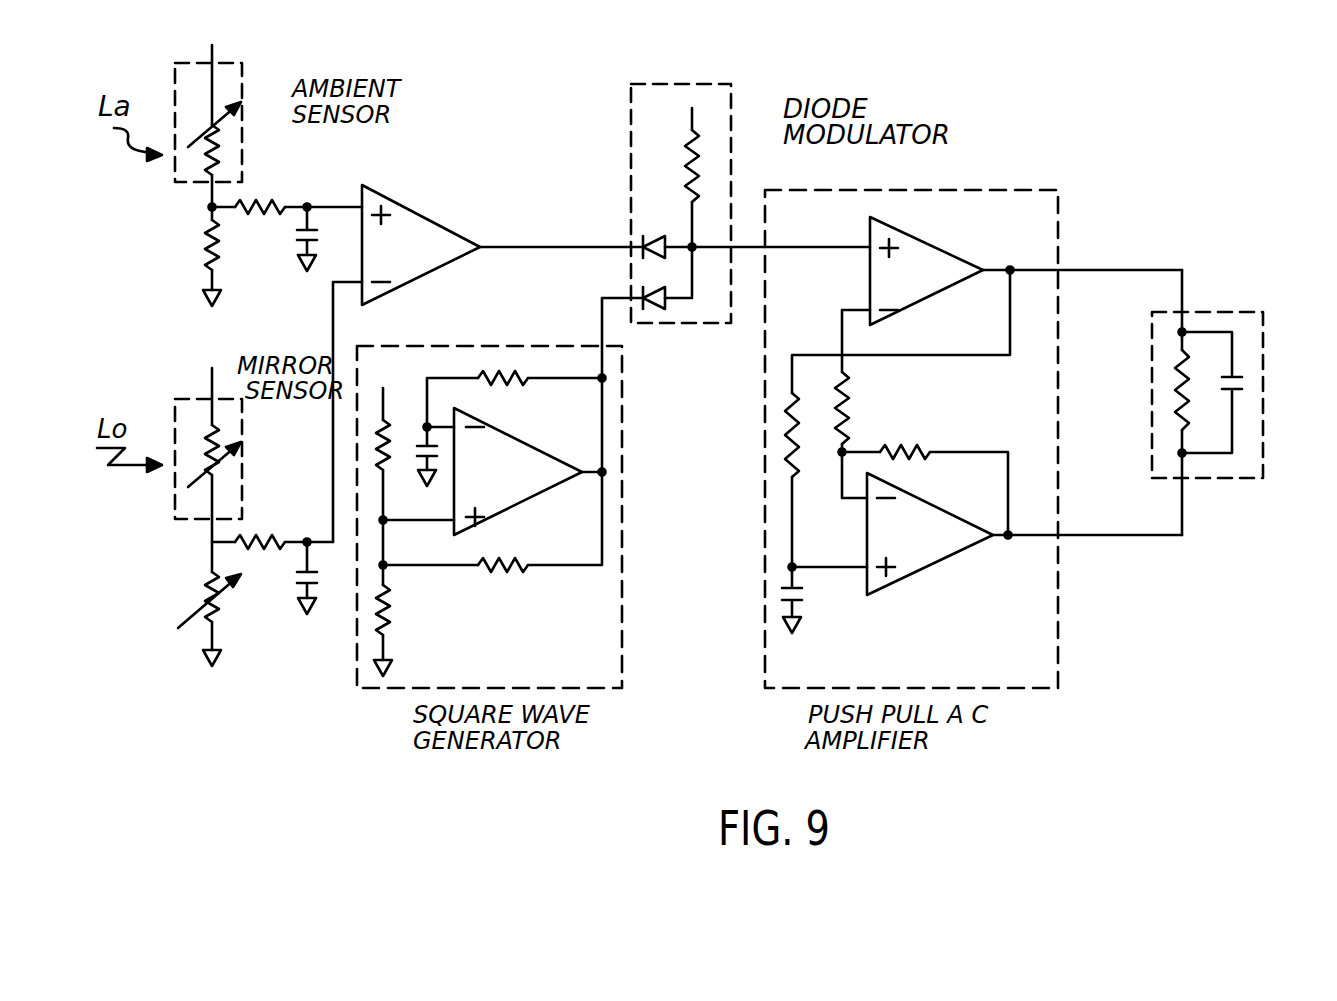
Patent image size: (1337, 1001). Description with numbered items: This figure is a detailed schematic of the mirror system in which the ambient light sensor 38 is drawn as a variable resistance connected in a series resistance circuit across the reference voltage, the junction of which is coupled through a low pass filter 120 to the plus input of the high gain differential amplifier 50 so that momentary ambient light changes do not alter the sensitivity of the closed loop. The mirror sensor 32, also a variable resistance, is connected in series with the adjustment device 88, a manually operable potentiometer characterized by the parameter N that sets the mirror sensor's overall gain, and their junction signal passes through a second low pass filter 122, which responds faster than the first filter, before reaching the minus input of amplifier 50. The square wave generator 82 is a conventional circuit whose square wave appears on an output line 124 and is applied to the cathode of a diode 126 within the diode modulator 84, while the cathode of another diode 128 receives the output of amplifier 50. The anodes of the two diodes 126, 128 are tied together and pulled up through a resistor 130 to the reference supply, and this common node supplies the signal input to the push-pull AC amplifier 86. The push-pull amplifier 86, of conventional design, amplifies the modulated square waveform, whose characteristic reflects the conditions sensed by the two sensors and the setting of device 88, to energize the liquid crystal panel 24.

The liquid crystal panel 24 is at (1265, 428).
The mirror sensor 32 is at (245, 475).
The ambient light sensor 38 is at (238, 63).
The high gain differential amplifier 50 is at (403, 204).
The square wave generator circuit 82 is at (622, 590).
The diode modulator circuit 84 is at (687, 209).
The push-pull AC amplifier circuit 86 is at (1058, 625).
The adjustment device 88 is at (215, 622).
The low pass filter 120 is at (269, 244).
The low pass filter 122 is at (276, 588).
The output line 124 is at (602, 330).
The diode 126 is at (667, 305).
The diode 128 is at (658, 236).
The resistor 130 is at (698, 188).